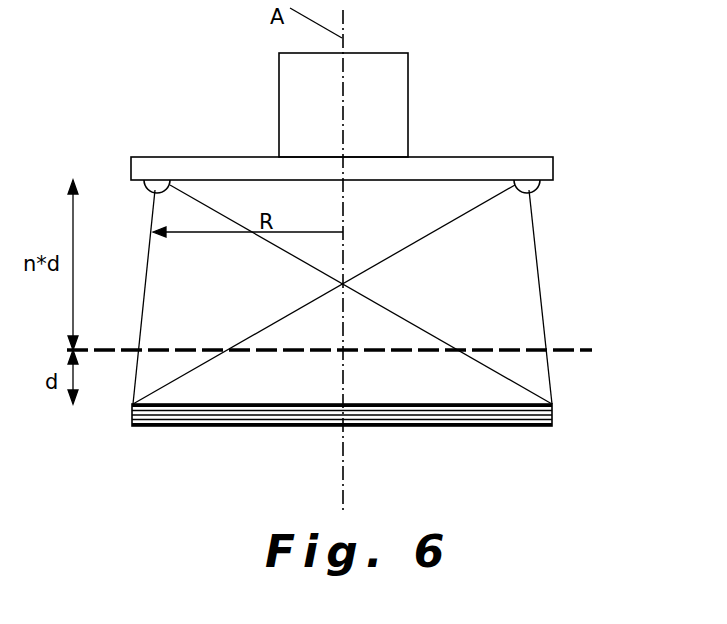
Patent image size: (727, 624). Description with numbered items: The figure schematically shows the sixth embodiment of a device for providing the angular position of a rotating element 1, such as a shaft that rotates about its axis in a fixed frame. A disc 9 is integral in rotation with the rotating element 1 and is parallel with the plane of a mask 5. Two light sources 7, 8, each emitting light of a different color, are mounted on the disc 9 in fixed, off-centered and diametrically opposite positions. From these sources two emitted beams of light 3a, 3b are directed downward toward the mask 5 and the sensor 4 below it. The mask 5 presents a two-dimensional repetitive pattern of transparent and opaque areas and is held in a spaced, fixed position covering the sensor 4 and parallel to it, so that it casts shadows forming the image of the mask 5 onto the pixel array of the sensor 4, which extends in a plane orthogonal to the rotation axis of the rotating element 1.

The rotating element 1 is at (410, 80).
The disc 9 is at (453, 165).
The light source 8 is at (145, 190).
The light source 7 is at (538, 185).
The mask 5 is at (555, 347).
The beam of light 3a is at (527, 378).
The beam of light 3b is at (160, 377).
The sensor 4 is at (240, 412).